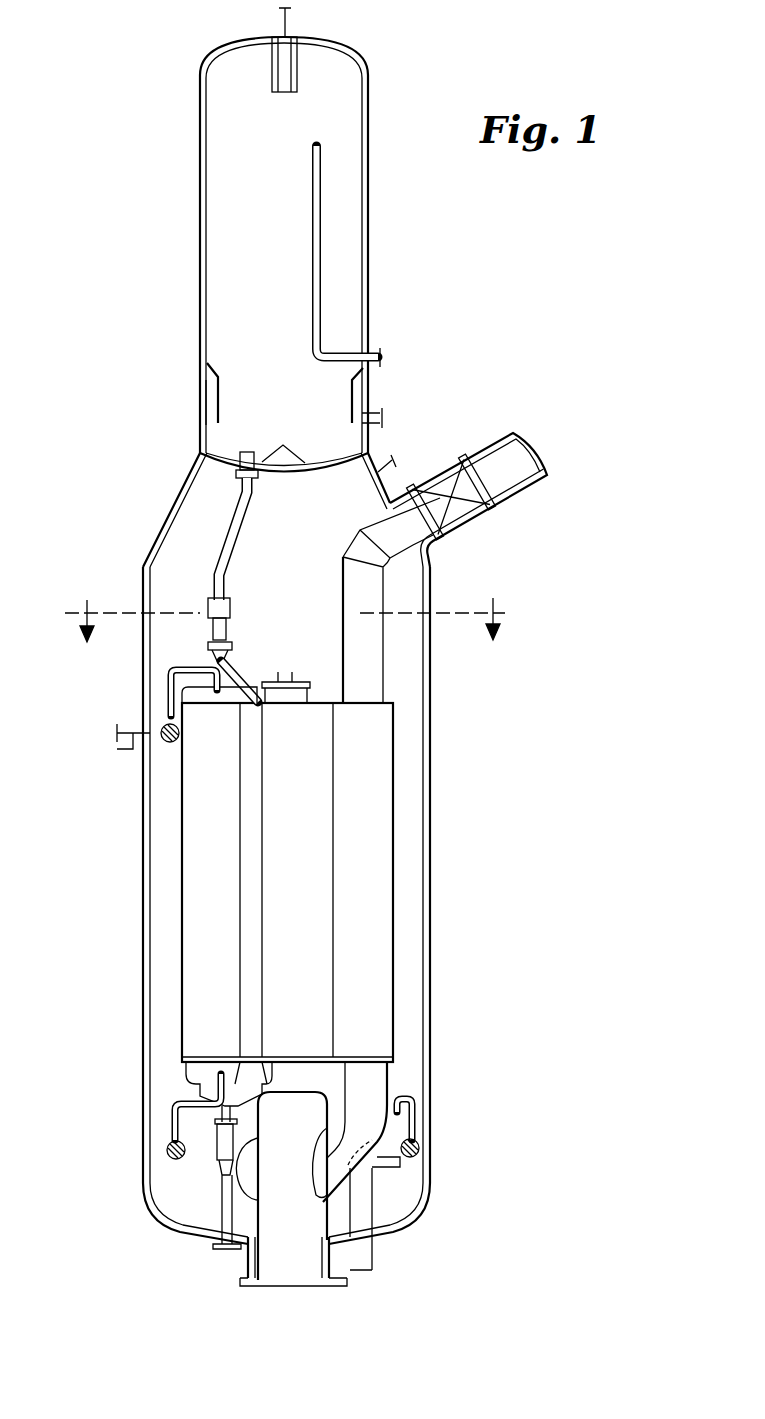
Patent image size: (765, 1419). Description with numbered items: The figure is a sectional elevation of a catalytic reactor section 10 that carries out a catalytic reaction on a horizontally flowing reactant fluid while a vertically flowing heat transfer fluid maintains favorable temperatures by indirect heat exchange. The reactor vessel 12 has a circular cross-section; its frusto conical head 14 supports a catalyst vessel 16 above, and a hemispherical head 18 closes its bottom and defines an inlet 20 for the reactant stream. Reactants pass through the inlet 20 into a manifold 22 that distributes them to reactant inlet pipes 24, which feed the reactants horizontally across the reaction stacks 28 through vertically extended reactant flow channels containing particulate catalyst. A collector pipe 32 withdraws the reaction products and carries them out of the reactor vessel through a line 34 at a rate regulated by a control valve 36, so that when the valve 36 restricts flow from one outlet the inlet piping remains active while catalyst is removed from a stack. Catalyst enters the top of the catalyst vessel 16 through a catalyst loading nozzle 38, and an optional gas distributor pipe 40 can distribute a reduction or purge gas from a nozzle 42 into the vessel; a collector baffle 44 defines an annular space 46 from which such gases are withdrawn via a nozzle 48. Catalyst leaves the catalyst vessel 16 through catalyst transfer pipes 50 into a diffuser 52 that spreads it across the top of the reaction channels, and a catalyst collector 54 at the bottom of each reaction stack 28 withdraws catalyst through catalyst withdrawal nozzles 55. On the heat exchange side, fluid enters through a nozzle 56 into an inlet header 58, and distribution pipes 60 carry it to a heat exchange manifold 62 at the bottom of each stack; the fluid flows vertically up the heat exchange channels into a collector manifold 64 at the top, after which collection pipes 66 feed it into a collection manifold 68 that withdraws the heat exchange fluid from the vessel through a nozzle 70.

The catalytic reactor section 10 is at (548, 610).
The reactor vessel 12 is at (432, 876).
The frusto conical head 14 is at (165, 522).
The catalyst vessel 16 is at (368, 205).
The hemispherical head 18 is at (432, 1205).
The inlet 20 is at (333, 1282).
The manifold 22 is at (300, 1138).
The reactant inlet pipe 24 is at (400, 1085).
The reaction stack 28 is at (396, 778).
The collector pipe 32 is at (387, 677).
The line 34 is at (525, 490).
The control valve 36 is at (452, 467).
The catalyst loading nozzle 38 is at (279, 17).
The gas distributor pipe 40 is at (323, 328).
The nozzle 42 is at (382, 361).
The collector baffle 44 is at (220, 398).
The annular space 46 is at (214, 398).
The nozzle 48 is at (386, 414).
The catalyst transfer pipe 50 is at (228, 540).
The diffuser 52 is at (225, 655).
The catalyst collector 54 is at (180, 1103).
The catalyst withdrawal nozzle 55 is at (210, 1241).
The nozzle 56 is at (374, 1262).
The inlet header 58 is at (166, 1150).
The distribution pipe 60 is at (170, 1122).
The heat exchange manifold 62 is at (209, 1060).
The collector manifold 64 is at (200, 704).
The collection pipe 66 is at (168, 680).
The collection manifold 68 is at (162, 727).
The nozzle 70 is at (118, 746).